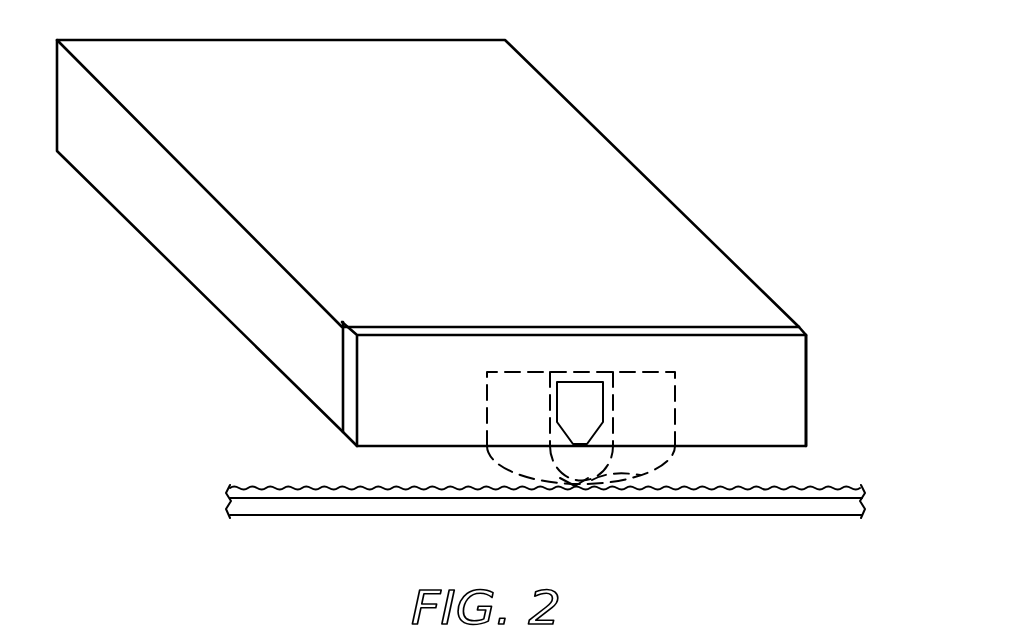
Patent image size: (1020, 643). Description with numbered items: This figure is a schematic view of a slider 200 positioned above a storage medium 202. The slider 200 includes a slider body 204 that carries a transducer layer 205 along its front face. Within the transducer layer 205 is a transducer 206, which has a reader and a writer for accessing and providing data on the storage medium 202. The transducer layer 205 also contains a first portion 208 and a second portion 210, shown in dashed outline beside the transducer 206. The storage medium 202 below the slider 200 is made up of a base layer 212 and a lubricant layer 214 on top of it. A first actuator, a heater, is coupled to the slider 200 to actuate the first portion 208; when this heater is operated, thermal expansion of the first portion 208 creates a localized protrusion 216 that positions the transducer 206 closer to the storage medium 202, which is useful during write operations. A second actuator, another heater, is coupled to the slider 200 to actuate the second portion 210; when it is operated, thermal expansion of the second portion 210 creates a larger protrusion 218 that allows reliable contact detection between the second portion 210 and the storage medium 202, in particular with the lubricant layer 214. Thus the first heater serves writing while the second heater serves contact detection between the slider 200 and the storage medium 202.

The slider 200 is at (775, 117).
The storage medium 202 is at (529, 499).
The slider body 204 is at (557, 90).
The transducer layer 205 is at (803, 327).
The transducer 206 is at (600, 380).
The first portion 208 is at (560, 380).
The second portion 210 is at (480, 385).
The base layer 212 is at (793, 515).
The lubricant layer 214 is at (805, 488).
The localized protrusion 216 is at (565, 473).
The larger protrusion 218 is at (642, 473).